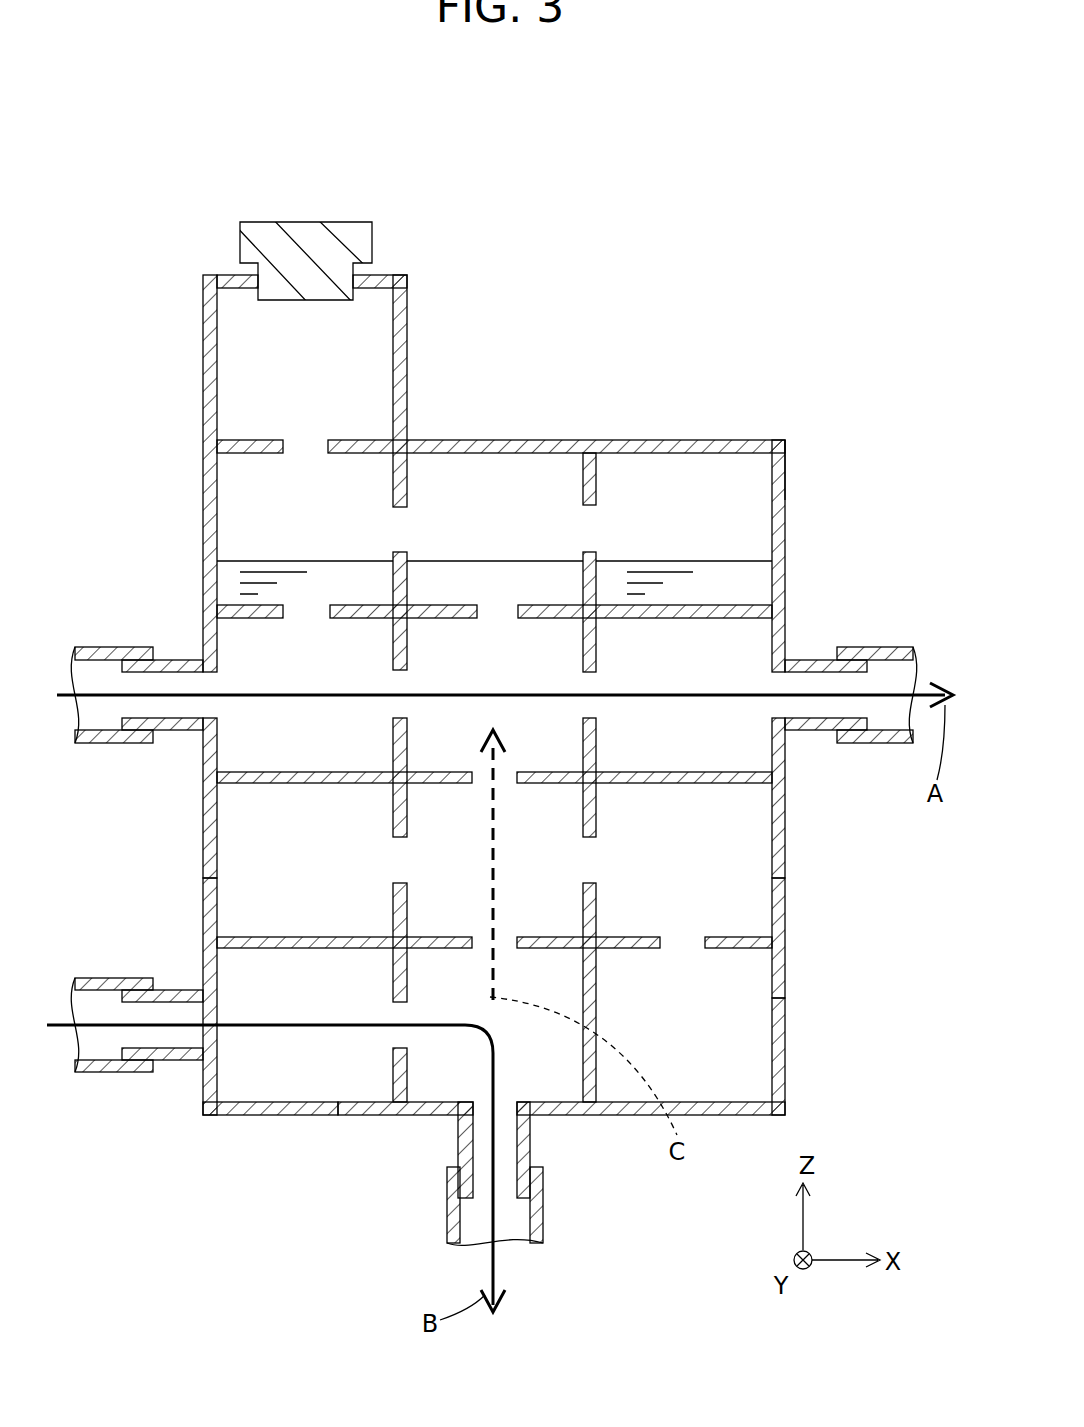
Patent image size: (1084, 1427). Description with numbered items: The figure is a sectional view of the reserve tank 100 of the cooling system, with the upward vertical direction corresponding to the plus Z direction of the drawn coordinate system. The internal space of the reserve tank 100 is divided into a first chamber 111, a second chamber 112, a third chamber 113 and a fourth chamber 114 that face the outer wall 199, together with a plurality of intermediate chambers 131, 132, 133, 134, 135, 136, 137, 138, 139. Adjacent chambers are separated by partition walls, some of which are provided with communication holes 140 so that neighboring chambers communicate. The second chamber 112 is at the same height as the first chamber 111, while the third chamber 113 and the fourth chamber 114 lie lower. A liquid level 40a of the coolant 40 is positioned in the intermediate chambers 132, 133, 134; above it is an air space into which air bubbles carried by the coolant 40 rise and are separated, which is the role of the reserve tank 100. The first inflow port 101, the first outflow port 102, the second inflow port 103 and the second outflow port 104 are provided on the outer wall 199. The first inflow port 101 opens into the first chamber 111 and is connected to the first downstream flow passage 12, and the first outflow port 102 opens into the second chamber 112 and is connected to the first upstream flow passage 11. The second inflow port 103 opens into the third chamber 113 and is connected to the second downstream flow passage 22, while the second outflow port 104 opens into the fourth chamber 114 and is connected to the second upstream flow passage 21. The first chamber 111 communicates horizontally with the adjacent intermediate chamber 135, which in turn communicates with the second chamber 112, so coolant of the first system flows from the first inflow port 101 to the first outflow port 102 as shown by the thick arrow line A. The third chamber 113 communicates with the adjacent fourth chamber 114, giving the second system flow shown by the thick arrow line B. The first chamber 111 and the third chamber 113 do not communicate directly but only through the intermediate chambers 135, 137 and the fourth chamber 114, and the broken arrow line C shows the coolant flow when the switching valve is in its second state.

The reserve tank 100 is at (190, 175).
The intermediate chamber 131 is at (371, 314).
The intermediate chamber 132 is at (230, 472).
The intermediate chamber 133 is at (484, 476).
The intermediate chamber 134 is at (746, 477).
The intermediate chamber 135 is at (549, 636).
The communication holes 140 is at (477, 603).
The outer wall 199 is at (785, 480).
The coolant 40 is at (737, 570).
The liquid level 40a is at (707, 561).
The first downstream flow passage 12 is at (105, 645).
The first upstream flow passage 11 is at (880, 647).
The first inflow port 101 is at (180, 660).
The first outflow port 102 is at (808, 660).
The second inflow port 103 is at (180, 1062).
The second outflow port 104 is at (532, 1140).
The second downstream flow passage 22 is at (105, 1075).
The second upstream flow passage 21 is at (543, 1220).
The first chamber 111 is at (235, 747).
The second chamber 112 is at (754, 748).
The third chamber 113 is at (241, 1083).
The fourth chamber 114 is at (421, 1084).
The intermediate chamber 136 is at (235, 863).
The intermediate chamber 137 is at (417, 917).
The intermediate chamber 138 is at (753, 916).
The intermediate chamber 139 is at (749, 1064).